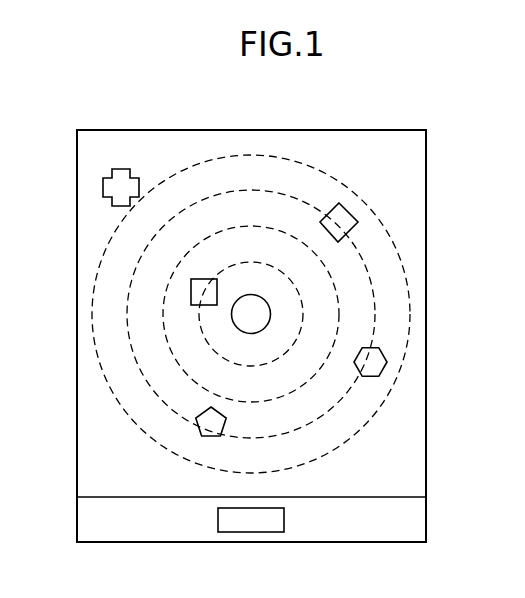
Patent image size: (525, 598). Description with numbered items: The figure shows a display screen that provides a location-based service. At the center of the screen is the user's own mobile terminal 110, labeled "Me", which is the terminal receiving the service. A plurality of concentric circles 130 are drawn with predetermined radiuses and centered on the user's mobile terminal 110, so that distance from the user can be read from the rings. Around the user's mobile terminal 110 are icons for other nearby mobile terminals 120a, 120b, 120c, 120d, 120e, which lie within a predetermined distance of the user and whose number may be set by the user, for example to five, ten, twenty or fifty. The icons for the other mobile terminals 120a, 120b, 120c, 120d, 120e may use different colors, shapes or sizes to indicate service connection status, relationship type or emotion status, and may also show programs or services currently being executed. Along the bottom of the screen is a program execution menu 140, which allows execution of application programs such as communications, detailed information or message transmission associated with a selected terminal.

The user's mobile terminal 110 is at (232, 318).
The other mobile terminal 120a is at (190, 284).
The other mobile terminal 120b is at (198, 418).
The other mobile terminal 120c is at (357, 218).
The other mobile terminal 120d is at (387, 356).
The other mobile terminal 120e is at (103, 186).
The concentric circles 130 is at (375, 302).
The program execution menu 140 is at (265, 533).